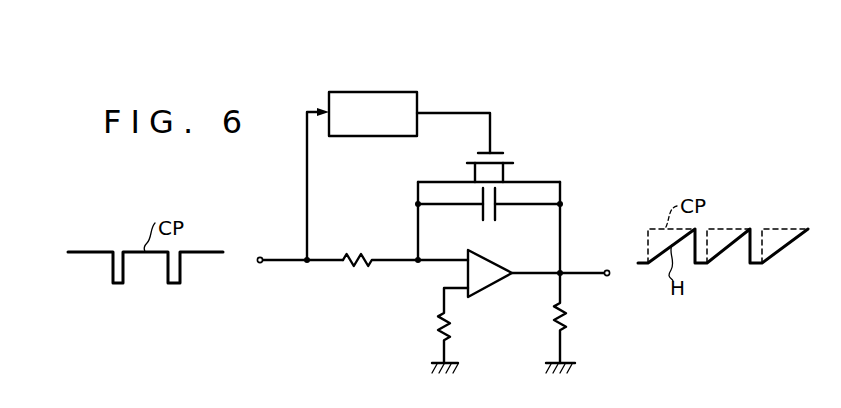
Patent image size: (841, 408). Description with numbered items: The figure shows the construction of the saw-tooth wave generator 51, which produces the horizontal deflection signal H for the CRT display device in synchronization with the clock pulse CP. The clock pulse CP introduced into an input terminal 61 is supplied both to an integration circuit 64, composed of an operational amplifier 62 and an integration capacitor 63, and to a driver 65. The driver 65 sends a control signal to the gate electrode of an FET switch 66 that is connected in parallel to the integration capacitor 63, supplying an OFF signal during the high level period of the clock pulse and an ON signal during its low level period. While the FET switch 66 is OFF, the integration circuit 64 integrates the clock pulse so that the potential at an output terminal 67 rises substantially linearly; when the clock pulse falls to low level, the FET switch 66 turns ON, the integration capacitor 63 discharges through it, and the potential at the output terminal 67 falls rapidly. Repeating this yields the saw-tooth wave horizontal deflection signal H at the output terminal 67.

The saw-tooth wave generator 51 is at (374, 230).
The input terminal 61 is at (262, 263).
The operational amplifier 62 is at (503, 283).
The integration capacitor 63 is at (479, 214).
The integration circuit 64 is at (541, 253).
The driver 65 is at (419, 119).
The FET switch 66 is at (506, 158).
The output terminal 67 is at (609, 276).